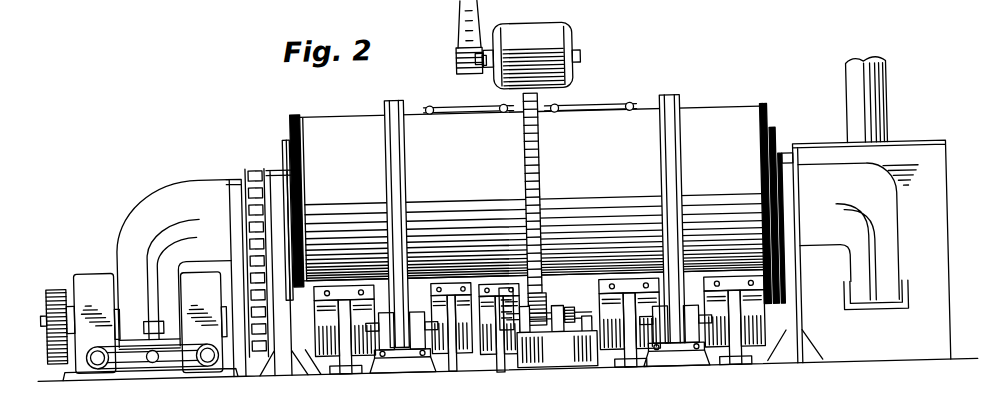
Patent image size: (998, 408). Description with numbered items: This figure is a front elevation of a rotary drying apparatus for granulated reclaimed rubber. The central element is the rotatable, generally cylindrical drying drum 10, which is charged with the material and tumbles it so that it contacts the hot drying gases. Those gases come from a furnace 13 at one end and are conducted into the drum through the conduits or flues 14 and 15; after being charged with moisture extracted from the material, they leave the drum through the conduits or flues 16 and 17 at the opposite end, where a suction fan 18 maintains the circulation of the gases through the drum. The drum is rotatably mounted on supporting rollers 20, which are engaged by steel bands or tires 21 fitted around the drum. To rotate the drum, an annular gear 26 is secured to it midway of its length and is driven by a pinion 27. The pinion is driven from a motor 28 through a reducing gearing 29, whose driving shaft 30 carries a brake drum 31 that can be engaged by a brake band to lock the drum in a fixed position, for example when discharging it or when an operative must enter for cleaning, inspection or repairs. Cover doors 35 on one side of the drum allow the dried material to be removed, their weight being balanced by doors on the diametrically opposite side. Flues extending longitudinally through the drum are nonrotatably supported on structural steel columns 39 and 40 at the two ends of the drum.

The drying drum 10 is at (643, 116).
The furnace 13 is at (918, 163).
The conduit or flue 14 is at (895, 215).
The conduit or flue 15 is at (858, 264).
The conduit or flue 16 is at (170, 188).
The conduit or flue 17 is at (163, 255).
The suction fan 18 is at (80, 276).
The rollers 20 is at (390, 300).
The steel bands or tires 21 is at (401, 100).
The annular gear 26 is at (543, 163).
The pinion 27 is at (542, 328).
The motor 28 is at (562, 25).
The reducing gearing 29 is at (568, 320).
The driving shaft 30 is at (548, 297).
The brake drum 31 is at (502, 290).
The cover doors 35 is at (453, 107).
The structural steel column 39 is at (283, 178).
The structural steel column 40 is at (788, 166).